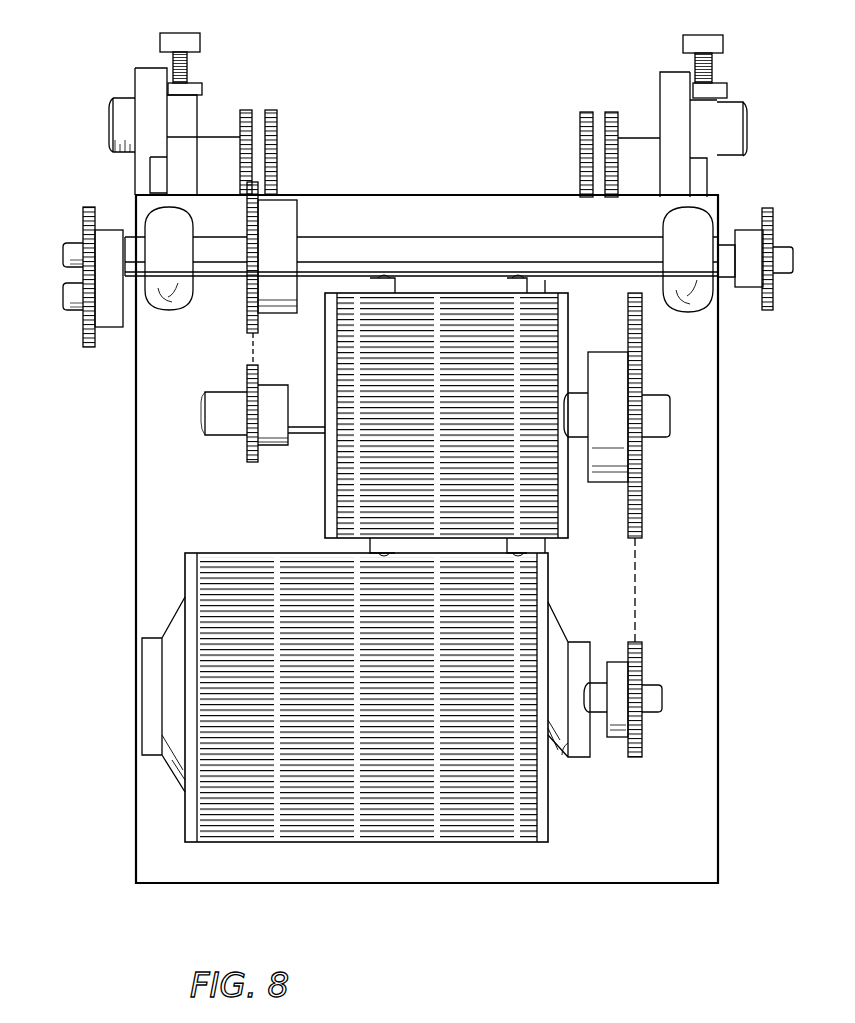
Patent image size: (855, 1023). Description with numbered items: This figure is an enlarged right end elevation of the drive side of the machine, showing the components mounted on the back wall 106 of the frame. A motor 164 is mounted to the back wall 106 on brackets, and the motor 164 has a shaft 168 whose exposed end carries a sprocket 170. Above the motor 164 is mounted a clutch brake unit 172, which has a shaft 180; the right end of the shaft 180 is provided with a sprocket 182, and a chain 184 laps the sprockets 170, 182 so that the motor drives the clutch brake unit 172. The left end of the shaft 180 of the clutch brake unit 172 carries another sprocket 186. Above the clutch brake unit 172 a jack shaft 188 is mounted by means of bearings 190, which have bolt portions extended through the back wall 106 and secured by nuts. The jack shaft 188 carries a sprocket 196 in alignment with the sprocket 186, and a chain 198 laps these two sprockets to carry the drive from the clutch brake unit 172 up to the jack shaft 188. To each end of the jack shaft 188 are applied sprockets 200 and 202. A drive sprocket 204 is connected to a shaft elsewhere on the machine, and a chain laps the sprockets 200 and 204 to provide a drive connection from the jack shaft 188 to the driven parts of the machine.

The back wall 106 is at (135, 548).
The motor 164 is at (507, 818).
The shaft 168 is at (663, 698).
The sprocket 170 is at (642, 653).
The clutch brake unit 172 is at (352, 518).
The shaft 180 is at (672, 422).
The sprocket 182 is at (640, 345).
The chain 184 is at (637, 578).
The sprocket 186 is at (247, 460).
The jack shaft 188 is at (427, 237).
The bearings 190 is at (163, 292).
The sprocket 196 is at (247, 331).
The chain 198 is at (262, 353).
The sprocket 200 is at (83, 219).
The sprocket 202 is at (790, 180).
The drive sprocket 204 is at (83, 343).